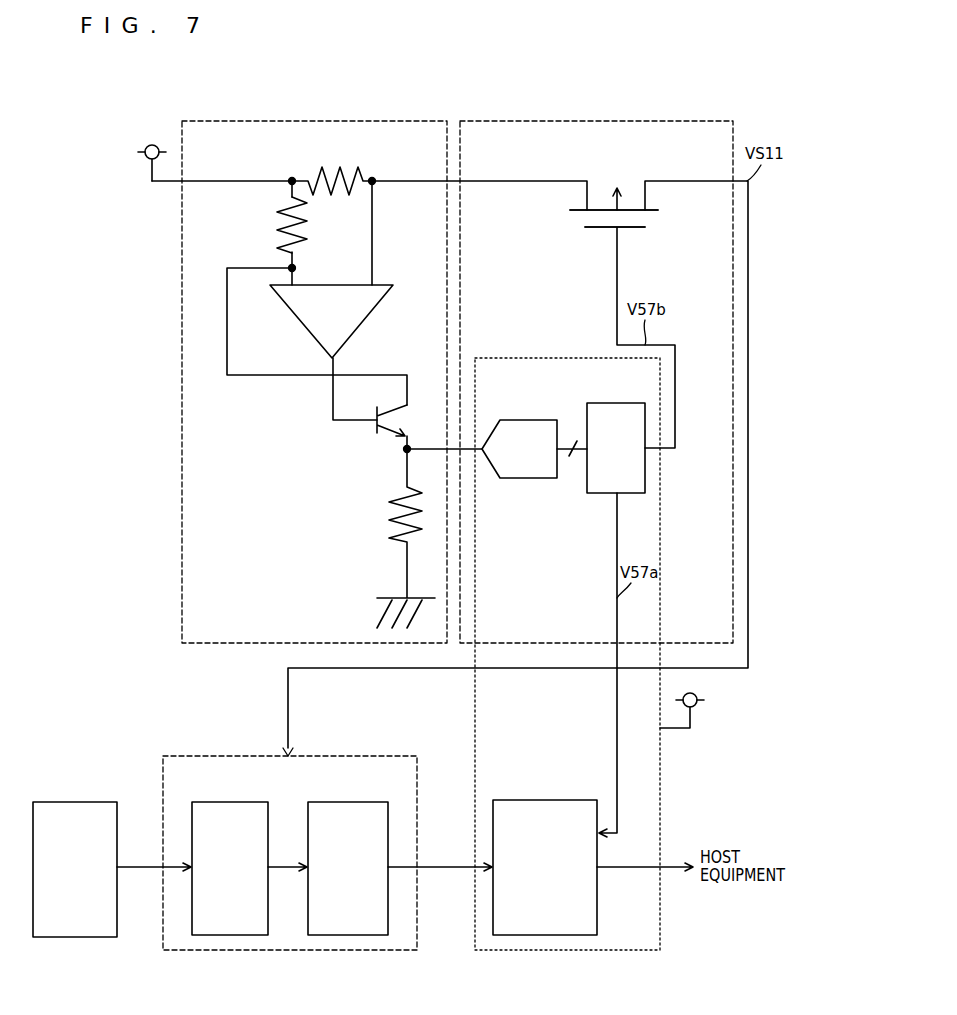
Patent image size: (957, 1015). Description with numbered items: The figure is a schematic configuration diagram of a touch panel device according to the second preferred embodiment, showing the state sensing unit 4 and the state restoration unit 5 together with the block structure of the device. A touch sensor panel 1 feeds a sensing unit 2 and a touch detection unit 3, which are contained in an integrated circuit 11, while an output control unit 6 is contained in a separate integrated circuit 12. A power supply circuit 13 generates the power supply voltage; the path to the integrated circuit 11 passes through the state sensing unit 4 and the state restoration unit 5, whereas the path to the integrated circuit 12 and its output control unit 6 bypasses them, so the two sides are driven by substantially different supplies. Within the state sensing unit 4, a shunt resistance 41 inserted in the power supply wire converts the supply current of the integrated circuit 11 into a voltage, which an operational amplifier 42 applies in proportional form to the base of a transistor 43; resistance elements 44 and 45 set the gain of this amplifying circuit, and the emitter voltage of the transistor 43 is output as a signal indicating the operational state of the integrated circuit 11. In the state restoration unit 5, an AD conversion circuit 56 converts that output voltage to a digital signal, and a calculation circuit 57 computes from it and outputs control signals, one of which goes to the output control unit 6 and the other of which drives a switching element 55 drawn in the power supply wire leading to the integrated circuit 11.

The touch sensor panel 1 is at (117, 802).
The sensing unit 2 is at (268, 802).
The touch detection unit 3 is at (388, 802).
The state sensing unit 4 is at (317, 119).
The state restoration unit 5 is at (597, 119).
The output control unit 6 is at (597, 800).
The integrated circuit 11 is at (410, 756).
The integrated circuit 12 is at (662, 803).
The power supply circuit 13 is at (152, 145).
The shunt resistance 41 is at (360, 175).
The operational amplifier 42 is at (385, 285).
The transistor 43 is at (377, 428).
The resistance element 44 is at (296, 250).
The resistance element 45 is at (405, 487).
The switching transistor 55 is at (619, 187).
The AD conversion circuit 56 is at (512, 420).
The calculation circuit 57 is at (605, 403).